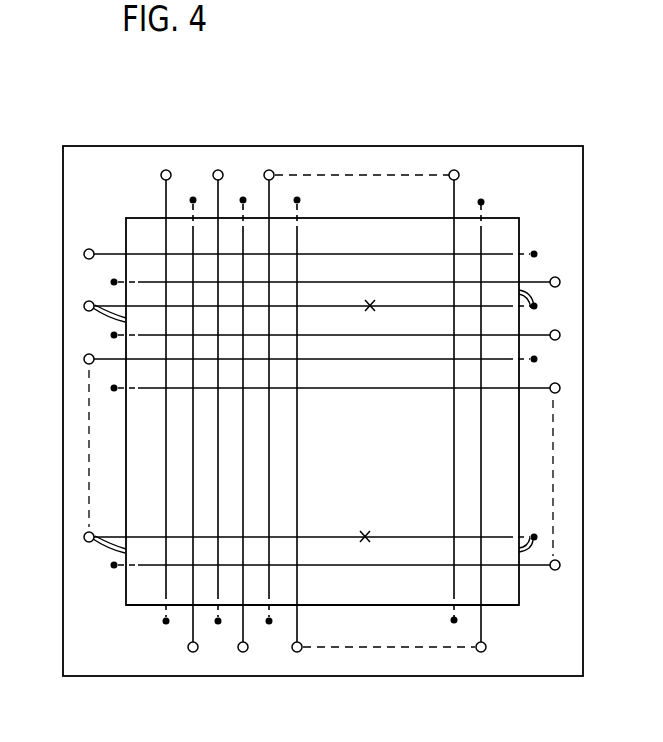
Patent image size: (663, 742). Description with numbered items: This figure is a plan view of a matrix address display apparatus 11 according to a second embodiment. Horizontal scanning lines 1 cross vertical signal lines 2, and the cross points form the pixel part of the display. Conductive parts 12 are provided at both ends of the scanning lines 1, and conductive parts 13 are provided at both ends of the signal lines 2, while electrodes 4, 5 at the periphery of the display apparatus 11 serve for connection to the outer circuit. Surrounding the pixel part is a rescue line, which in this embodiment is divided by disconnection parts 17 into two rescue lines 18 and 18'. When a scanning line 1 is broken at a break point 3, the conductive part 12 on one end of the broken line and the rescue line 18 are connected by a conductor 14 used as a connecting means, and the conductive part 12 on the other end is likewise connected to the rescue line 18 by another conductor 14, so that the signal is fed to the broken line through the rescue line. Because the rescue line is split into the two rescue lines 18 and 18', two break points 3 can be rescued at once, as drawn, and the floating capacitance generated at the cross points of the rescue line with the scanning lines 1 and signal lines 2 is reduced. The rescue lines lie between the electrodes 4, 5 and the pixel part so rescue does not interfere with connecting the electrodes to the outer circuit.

The scanning lines 1 is at (423, 305).
The signal lines 2 is at (217, 472).
The break point 3 is at (370, 305).
The electrode 4 is at (558, 386).
The electrode 5 is at (242, 652).
The display apparatus 11 is at (114, 664).
The conductive parts 12 is at (114, 282).
The conductive parts 13 is at (193, 198).
The conductor 14 is at (102, 318).
The disconnection parts 17 is at (126, 410).
The rescue line 18 is at (322, 356).
The rescue line 18' is at (322, 667).